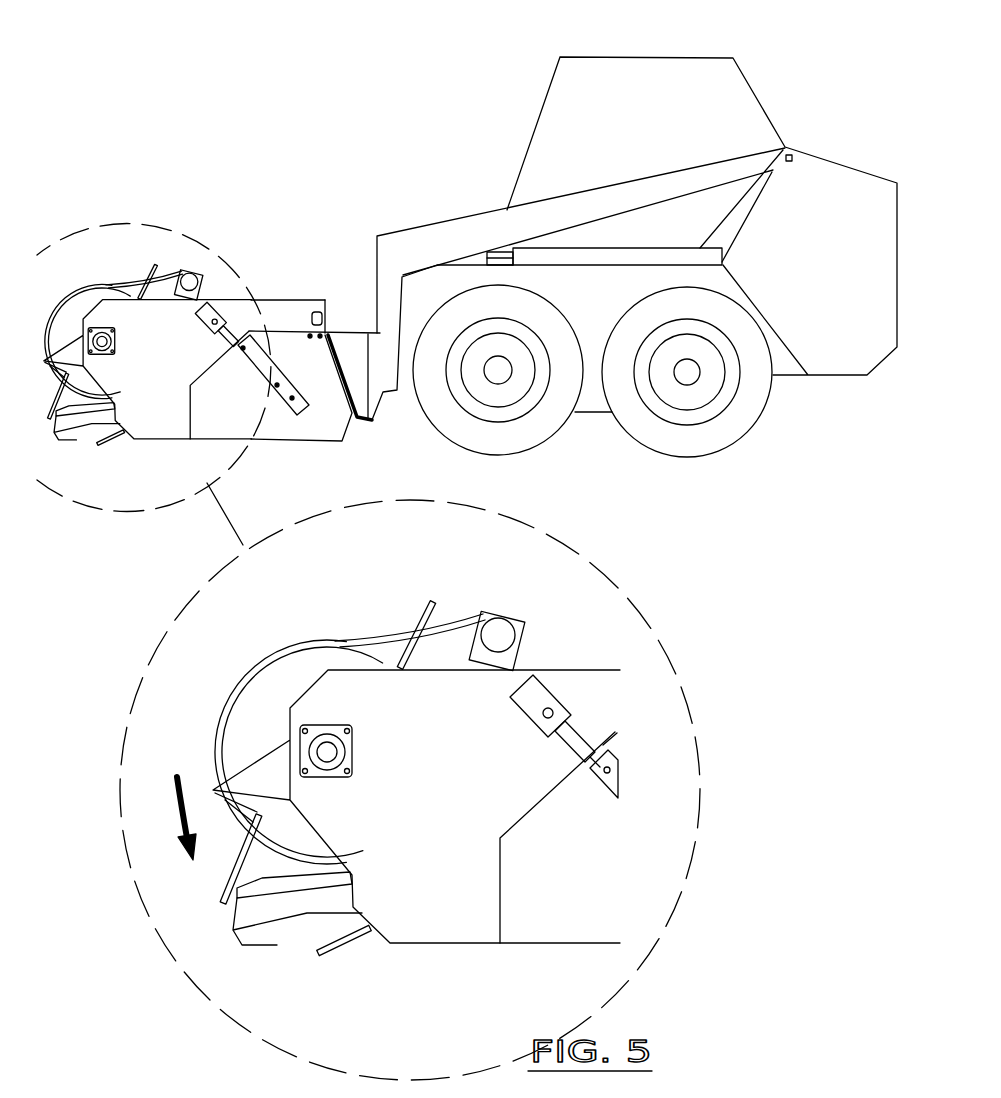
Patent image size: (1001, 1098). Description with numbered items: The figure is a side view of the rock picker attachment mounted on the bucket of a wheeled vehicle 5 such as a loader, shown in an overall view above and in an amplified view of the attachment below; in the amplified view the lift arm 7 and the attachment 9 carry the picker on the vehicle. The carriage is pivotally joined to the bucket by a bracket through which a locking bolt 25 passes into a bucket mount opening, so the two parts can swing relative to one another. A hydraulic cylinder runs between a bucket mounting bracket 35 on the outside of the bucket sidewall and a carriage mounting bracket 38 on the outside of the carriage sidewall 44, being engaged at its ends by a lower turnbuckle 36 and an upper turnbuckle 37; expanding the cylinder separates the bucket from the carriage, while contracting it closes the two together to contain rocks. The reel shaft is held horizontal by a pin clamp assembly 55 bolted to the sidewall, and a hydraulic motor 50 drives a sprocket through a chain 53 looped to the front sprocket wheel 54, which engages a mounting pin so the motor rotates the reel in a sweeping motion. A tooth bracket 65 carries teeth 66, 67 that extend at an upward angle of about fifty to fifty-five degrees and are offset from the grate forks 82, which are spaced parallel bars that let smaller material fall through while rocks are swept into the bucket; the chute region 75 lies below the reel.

The wheeled vehicle 5 is at (600, 56).
The lift arm 7 is at (411, 231).
The mower attachment 9 is at (349, 333).
The locking bolt 25 is at (308, 300).
The bucket mounting bracket 35 is at (300, 417).
The lower turnbuckle 36 is at (271, 400).
The upper turnbuckle 37 is at (578, 717).
The carriage mounting bracket 38 is at (547, 690).
The carriage sidewall 44 is at (455, 793).
The hydraulic motor 50 is at (500, 633).
The chain 53 is at (353, 637).
The front sprocket wheel 54 is at (250, 723).
The pin clamp assembly 55 is at (330, 765).
The tooth bracket 65 is at (243, 826).
The teeth 66 is at (434, 600).
The teeth 67 is at (223, 887).
The discharge chute 75 is at (262, 933).
The grate forks 82 is at (337, 956).